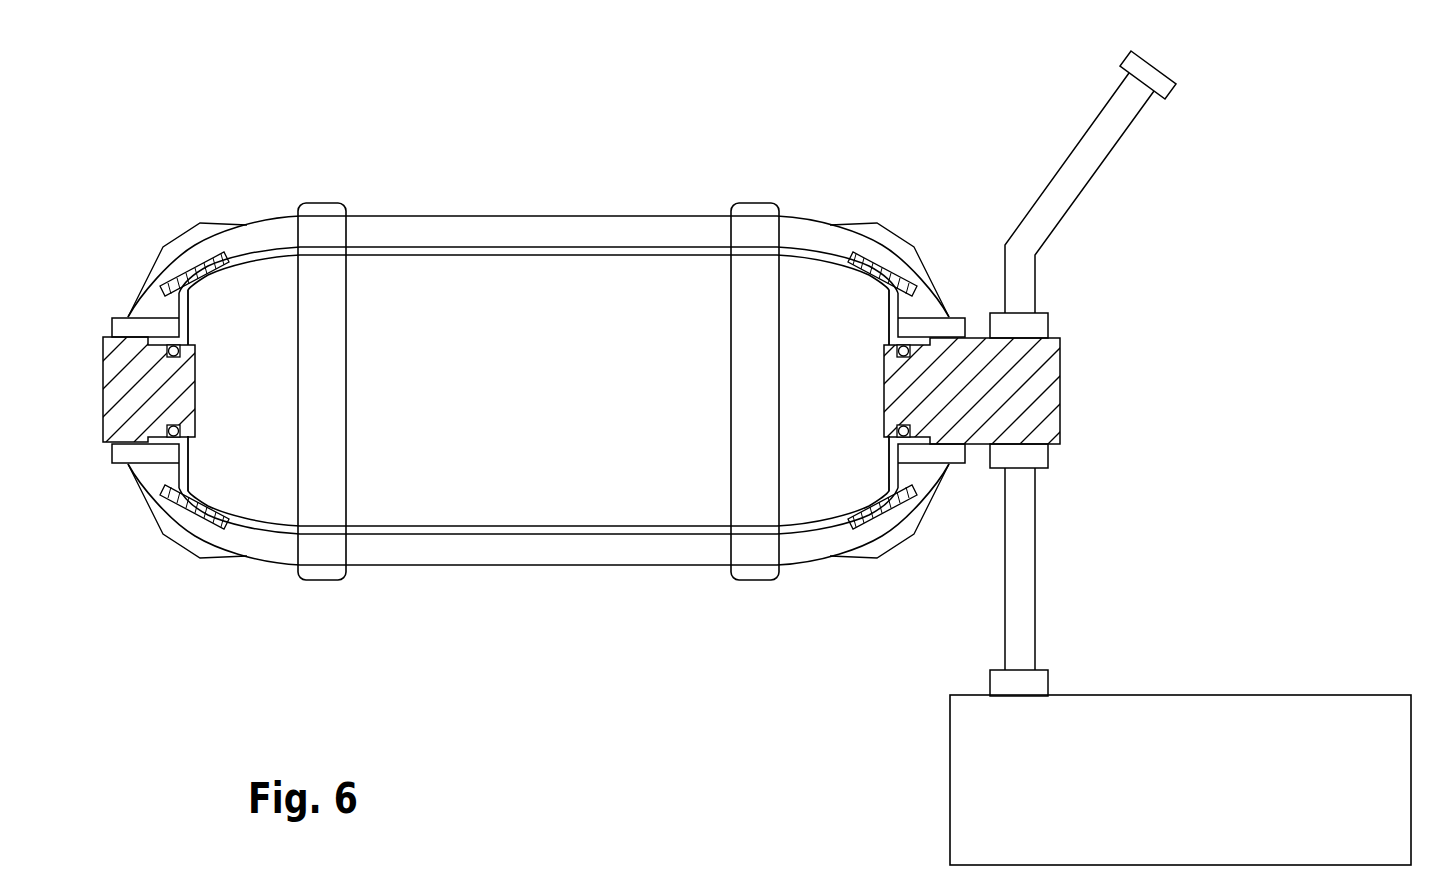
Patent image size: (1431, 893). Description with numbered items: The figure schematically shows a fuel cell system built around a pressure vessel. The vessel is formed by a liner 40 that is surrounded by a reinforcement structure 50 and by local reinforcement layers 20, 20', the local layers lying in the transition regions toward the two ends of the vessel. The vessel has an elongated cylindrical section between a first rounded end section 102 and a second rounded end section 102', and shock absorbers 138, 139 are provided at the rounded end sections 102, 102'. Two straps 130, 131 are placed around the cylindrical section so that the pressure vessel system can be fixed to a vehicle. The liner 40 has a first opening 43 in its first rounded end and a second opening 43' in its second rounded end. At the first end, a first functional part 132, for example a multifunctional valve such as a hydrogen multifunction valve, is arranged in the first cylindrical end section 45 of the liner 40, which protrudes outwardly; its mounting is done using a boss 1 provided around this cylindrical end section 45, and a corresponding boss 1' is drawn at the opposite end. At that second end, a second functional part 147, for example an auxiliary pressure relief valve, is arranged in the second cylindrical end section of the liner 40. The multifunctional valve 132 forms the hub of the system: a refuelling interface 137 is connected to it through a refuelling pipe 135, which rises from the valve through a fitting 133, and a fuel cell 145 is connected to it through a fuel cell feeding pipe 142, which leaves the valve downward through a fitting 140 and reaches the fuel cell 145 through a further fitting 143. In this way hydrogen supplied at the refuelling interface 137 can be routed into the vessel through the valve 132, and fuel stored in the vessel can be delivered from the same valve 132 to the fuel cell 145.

The boss 1 is at (892, 390).
The boss 1' is at (144, 447).
The local reinforcement layer 20 is at (876, 339).
The local reinforcement layer 20' is at (207, 339).
The liner 40 is at (435, 528).
The first opening 43 is at (842, 328).
The second opening 43' is at (237, 467).
The first cylindrical end section 45 is at (920, 341).
The reinforcement structure 50 is at (498, 556).
The first rounded end section 102 is at (886, 323).
The second rounded end section 102' is at (201, 351).
The strap 130 is at (746, 508).
The strap 131 is at (337, 548).
The first functional part 132 is at (1027, 397).
The fitting 133 is at (1020, 322).
The refuelling pipe 135 is at (1075, 172).
The refuelling interface 137 is at (1160, 62).
The shock absorber 138 is at (878, 223).
The shock absorber 139 is at (187, 243).
The fitting 140 is at (1011, 455).
The fuel cell feeding pipe 142 is at (1004, 621).
The fitting 143 is at (1021, 670).
The fuel cell 145 is at (1261, 695).
The second functional part 147 is at (118, 400).